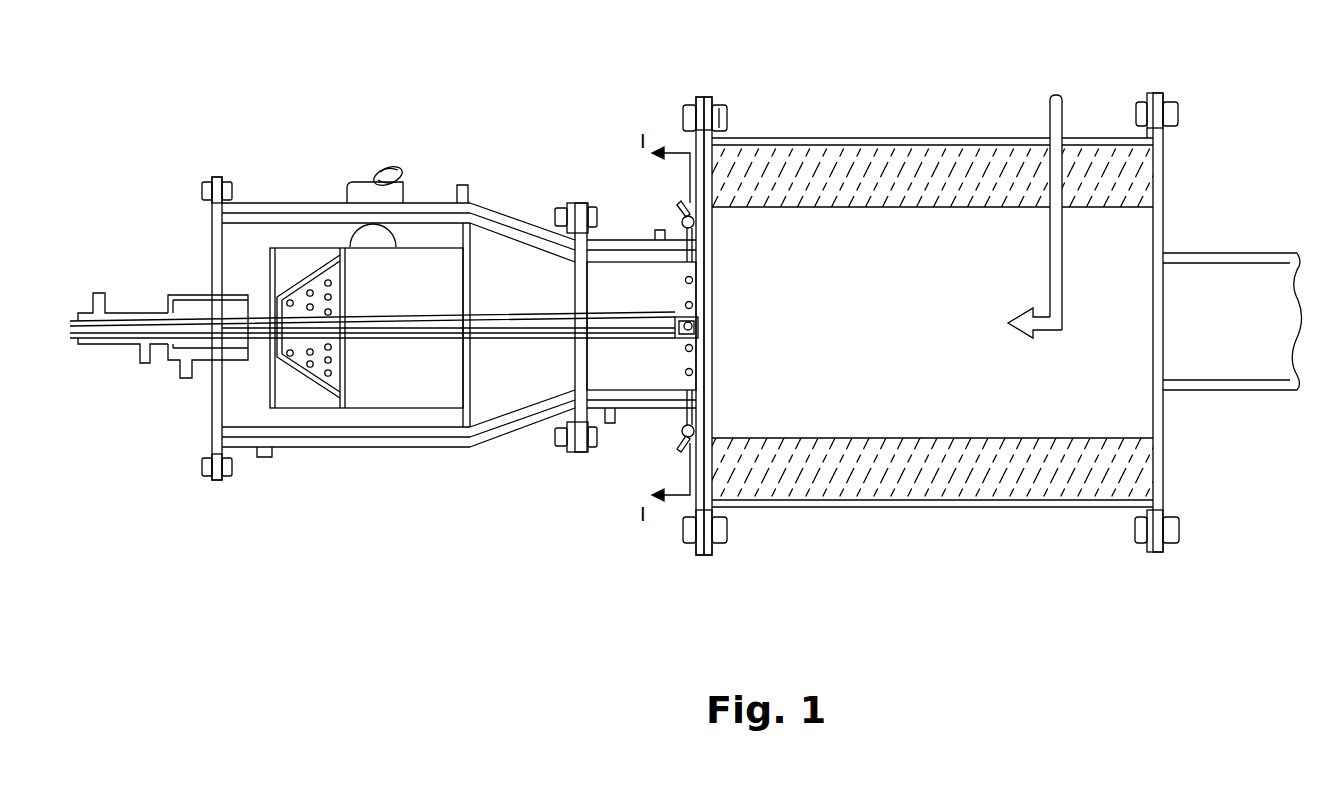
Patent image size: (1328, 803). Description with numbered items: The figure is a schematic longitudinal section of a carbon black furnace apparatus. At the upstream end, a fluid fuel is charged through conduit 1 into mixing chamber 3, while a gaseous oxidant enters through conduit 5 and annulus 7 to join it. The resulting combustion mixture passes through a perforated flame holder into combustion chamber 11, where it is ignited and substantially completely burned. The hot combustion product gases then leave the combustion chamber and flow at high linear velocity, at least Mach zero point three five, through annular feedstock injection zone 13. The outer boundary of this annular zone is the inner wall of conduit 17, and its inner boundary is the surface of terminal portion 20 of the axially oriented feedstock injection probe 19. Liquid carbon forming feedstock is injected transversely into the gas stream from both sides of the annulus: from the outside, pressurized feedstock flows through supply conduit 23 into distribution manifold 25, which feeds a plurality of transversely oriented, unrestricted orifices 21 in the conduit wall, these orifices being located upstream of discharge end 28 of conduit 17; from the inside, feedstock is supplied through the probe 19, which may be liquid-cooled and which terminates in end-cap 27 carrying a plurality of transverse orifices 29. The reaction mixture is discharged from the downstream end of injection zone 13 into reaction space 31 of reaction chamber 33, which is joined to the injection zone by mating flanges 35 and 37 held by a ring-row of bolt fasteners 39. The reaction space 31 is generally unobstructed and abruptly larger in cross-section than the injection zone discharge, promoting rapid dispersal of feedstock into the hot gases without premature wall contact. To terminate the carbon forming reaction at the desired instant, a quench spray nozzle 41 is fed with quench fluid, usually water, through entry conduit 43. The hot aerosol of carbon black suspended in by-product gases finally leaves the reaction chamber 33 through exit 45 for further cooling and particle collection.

The conduit 1 is at (180, 293).
The mixing chamber 3 is at (247, 272).
The conduit 5 is at (383, 170).
The annulus 7 is at (310, 250).
The combustion chamber 11 is at (402, 382).
The annular feedstock injection zone 13 is at (638, 375).
The conduit 17 is at (628, 413).
The feedstock injection probe 19 is at (484, 313).
The terminal portion 20 is at (598, 314).
The orifices 21 is at (698, 378).
The supply conduit 23 is at (680, 203).
The distribution manifold 25 is at (682, 220).
The end-cap 27 is at (700, 320).
The discharge end 28 is at (698, 280).
The orifices 29 is at (700, 327).
The reaction space 31 is at (888, 339).
The reaction chamber 33 is at (880, 207).
The mating flange 35 is at (704, 97).
The mating flange 37 is at (712, 100).
The bolt fasteners 39 is at (728, 116).
The spray nozzle 41 is at (1020, 332).
The entry conduit 43 is at (1062, 96).
The exit 45 is at (1237, 334).